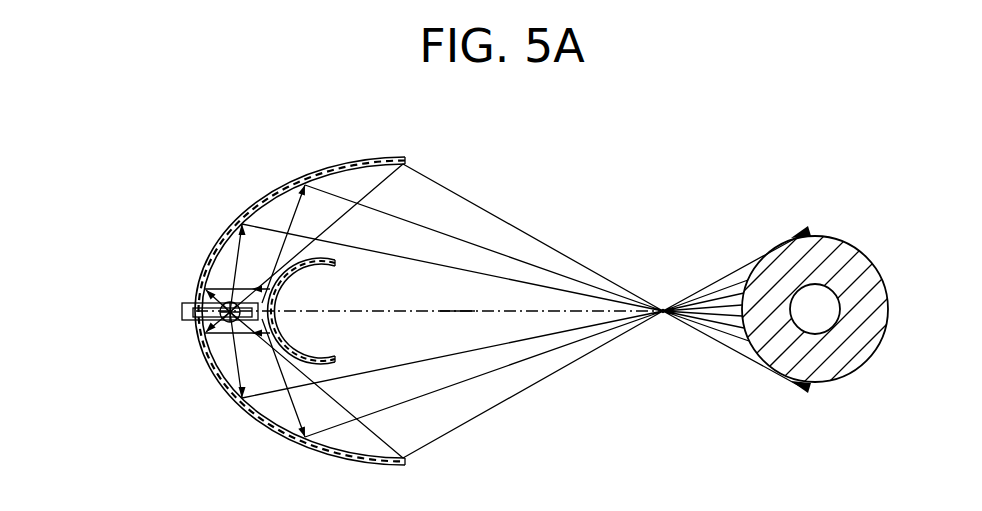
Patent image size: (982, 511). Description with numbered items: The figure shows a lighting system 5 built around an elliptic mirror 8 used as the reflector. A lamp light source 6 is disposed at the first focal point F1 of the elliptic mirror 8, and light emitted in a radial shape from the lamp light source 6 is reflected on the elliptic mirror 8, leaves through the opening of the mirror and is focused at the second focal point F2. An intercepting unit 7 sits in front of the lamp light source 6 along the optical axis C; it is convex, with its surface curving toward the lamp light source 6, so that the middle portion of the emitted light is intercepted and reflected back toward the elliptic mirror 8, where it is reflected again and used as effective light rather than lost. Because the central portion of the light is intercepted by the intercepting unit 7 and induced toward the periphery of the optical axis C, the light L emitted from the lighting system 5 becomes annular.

The lighting system 5 is at (160, 354).
The lamp light source 6 is at (208, 321).
The intercepting unit 7 is at (329, 261).
The elliptic mirror 8 is at (221, 238).
The first focal point F1 is at (233, 325).
The second focal point F2 is at (663, 315).
The optical axis C is at (457, 314).
The light L is at (832, 236).